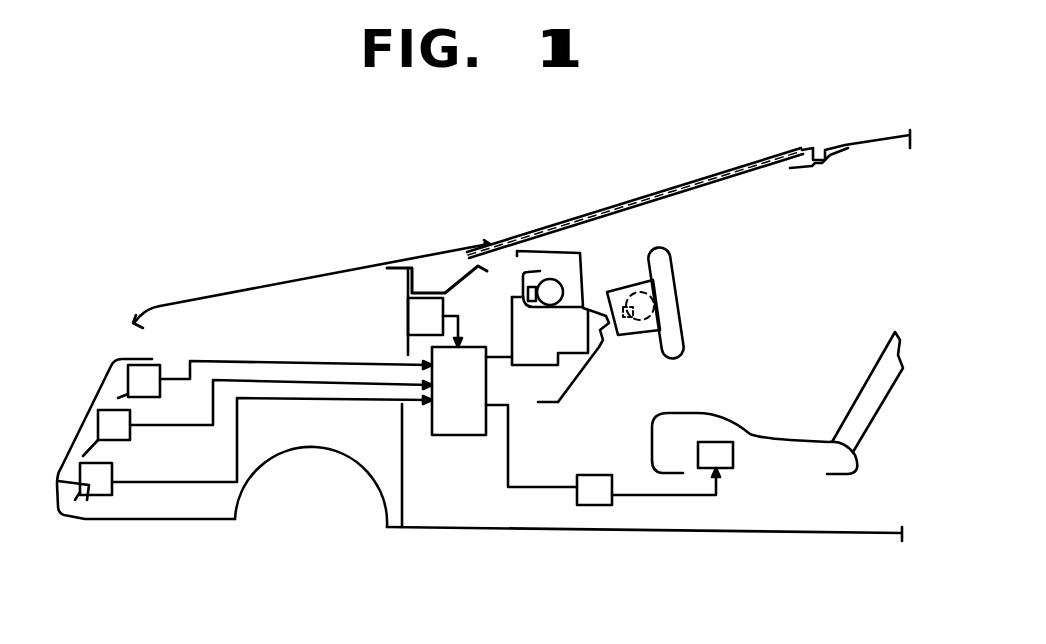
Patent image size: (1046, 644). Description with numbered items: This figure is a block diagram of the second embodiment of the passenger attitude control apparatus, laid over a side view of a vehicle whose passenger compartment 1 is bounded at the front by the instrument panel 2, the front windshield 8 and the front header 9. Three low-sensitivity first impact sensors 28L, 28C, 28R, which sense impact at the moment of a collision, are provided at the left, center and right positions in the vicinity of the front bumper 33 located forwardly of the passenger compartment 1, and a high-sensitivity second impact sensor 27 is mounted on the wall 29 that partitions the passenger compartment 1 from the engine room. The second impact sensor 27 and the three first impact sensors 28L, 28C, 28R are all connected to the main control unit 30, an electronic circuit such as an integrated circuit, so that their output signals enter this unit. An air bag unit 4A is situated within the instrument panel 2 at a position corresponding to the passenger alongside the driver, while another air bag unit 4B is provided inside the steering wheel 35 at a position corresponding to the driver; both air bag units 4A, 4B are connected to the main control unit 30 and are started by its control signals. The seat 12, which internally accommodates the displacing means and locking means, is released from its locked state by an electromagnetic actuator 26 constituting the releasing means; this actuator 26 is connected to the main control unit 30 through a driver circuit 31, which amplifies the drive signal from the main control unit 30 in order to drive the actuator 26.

The passenger compartment 1 is at (836, 246).
The instrument panel 2 is at (556, 254).
The air bag unit 4A is at (549, 280).
The air bag unit 4B is at (636, 290).
The front windshield 8 is at (698, 178).
The front header 9 is at (818, 147).
The seat 12 is at (774, 435).
The electromagnetic actuator 26 is at (727, 470).
The second impact sensor 27 is at (420, 318).
The first impact sensor 28R is at (136, 365).
The first impact sensor 28C is at (130, 438).
The first impact sensor 28L is at (100, 495).
The wall 29 is at (400, 345).
The main control unit 30 is at (457, 435).
The driver circuit 31 is at (598, 505).
The front bumper 33 is at (57, 508).
The steering wheel 35 is at (676, 260).